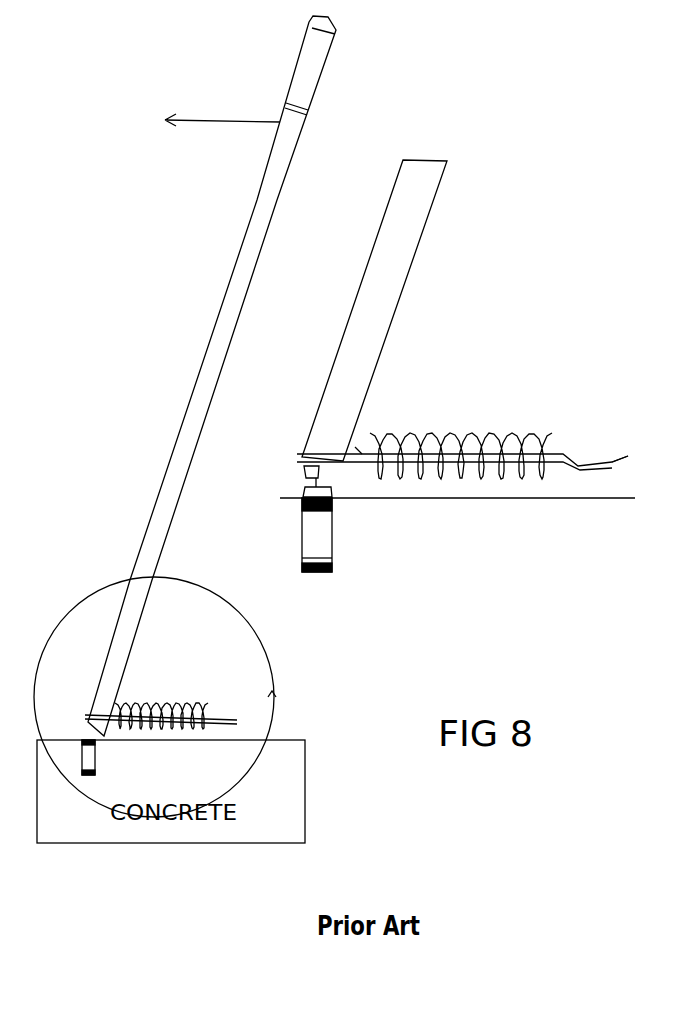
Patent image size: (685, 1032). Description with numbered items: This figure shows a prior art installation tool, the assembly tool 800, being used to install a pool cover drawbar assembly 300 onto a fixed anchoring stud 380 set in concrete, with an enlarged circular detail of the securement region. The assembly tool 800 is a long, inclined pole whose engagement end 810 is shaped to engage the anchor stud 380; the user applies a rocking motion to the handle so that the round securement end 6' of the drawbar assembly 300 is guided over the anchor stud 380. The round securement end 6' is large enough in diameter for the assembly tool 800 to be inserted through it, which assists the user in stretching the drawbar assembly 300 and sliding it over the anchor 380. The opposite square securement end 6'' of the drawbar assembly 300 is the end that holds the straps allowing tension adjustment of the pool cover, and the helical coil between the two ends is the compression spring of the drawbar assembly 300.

The assembly tool 800 is at (111, 440).
The drawbar assembly 300 is at (537, 390).
The anchoring stud 380 is at (328, 575).
The engagement end 810 is at (342, 473).
The round securement end 6' is at (380, 424).
The square securement end 6'' is at (626, 446).